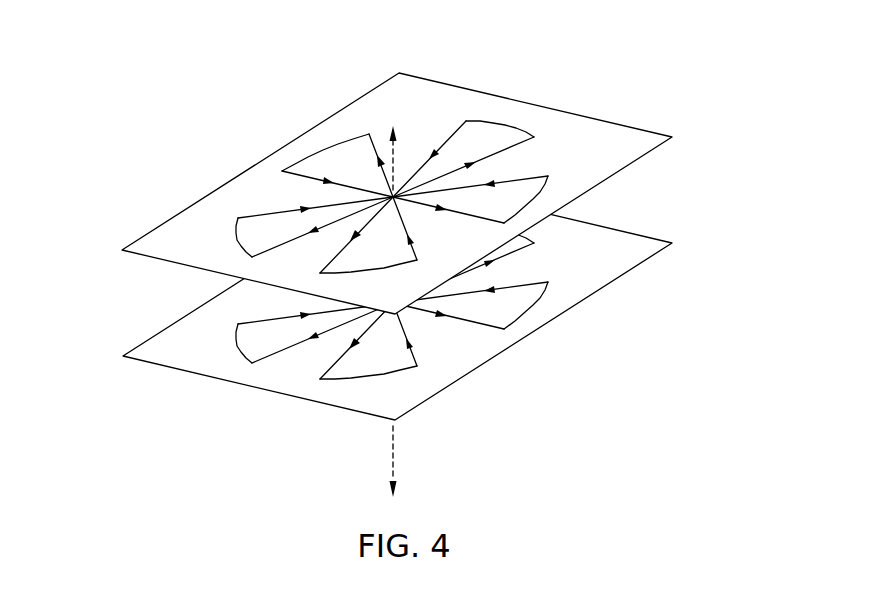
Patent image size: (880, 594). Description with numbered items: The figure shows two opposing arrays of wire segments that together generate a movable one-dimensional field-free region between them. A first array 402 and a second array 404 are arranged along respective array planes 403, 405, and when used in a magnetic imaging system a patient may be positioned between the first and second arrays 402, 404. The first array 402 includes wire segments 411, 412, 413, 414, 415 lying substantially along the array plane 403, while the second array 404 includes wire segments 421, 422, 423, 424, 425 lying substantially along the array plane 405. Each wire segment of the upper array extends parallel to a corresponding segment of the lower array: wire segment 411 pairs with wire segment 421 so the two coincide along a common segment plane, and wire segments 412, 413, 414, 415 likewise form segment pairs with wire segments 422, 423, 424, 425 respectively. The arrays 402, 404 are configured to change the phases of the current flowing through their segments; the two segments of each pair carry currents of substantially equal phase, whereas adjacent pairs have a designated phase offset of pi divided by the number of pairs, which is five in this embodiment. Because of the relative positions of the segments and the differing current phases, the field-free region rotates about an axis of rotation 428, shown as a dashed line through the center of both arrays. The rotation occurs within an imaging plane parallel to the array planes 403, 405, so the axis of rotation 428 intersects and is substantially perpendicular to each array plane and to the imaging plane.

The first array 402 is at (417, 152).
The array plane 403 is at (636, 149).
The second array 404 is at (489, 309).
The array plane 405 is at (425, 299).
The wire segment 411 is at (457, 127).
The wire segment 412 is at (372, 139).
The wire segment 413 is at (288, 183).
The wire segment 414 is at (525, 182).
The wire segment 415 is at (520, 143).
The wire segment 421 is at (341, 380).
The wire segment 422 is at (406, 373).
The wire segment 423 is at (475, 344).
The wire segment 424 is at (483, 265).
The wire segment 425 is at (311, 369).
The axis of rotation 428 is at (395, 156).